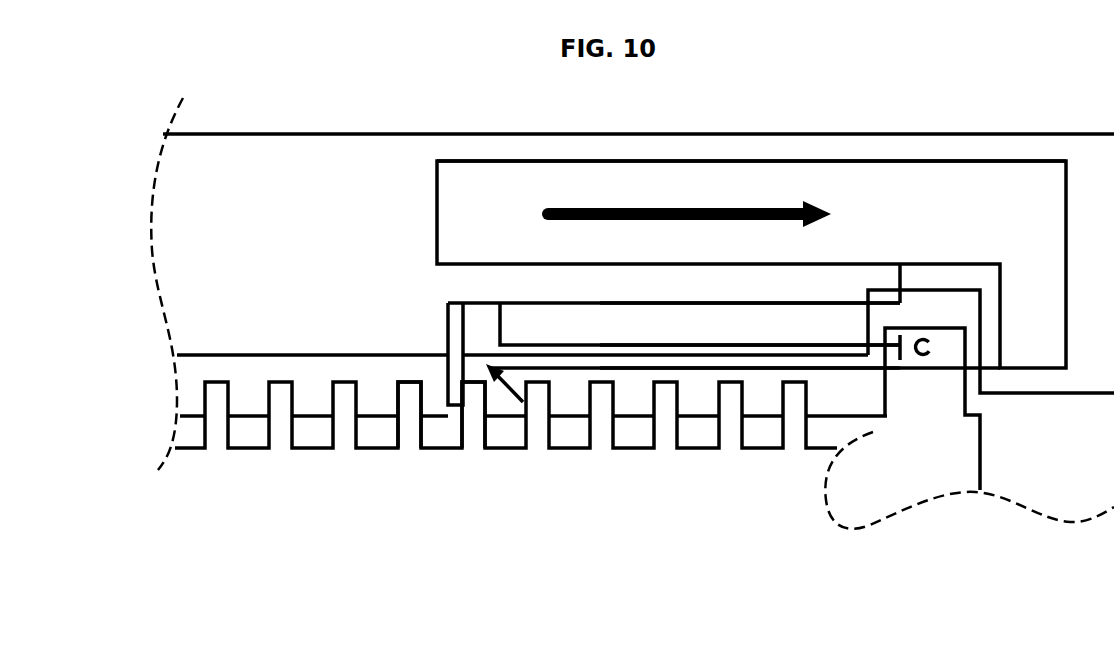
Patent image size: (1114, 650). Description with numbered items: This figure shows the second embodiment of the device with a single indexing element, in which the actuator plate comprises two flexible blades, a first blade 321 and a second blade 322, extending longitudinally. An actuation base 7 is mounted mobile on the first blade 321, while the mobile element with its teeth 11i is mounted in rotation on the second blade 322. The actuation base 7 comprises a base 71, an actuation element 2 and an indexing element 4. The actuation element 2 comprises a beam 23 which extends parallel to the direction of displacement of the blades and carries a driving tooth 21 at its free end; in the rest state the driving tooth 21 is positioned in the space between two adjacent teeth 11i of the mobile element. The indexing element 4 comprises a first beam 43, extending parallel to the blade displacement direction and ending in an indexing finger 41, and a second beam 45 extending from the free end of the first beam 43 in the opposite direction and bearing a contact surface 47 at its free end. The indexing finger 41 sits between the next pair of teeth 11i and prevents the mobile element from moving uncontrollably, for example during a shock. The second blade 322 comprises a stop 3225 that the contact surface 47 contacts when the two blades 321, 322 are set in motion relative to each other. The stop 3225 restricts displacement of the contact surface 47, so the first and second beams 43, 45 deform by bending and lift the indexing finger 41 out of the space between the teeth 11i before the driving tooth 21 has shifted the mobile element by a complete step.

The first blade 321 is at (271, 160).
The second blade 322 is at (957, 462).
The stop 3225 is at (937, 349).
The actuation base 7 is at (419, 204).
The base 71 is at (494, 178).
The indexing finger 41 is at (453, 338).
The indexing element 4 is at (588, 303).
The first beam 43 is at (628, 303).
The second beam 45 is at (628, 345).
The contact surface 47 is at (913, 336).
The actuation element 2 is at (757, 382).
The driving tooth 21 is at (512, 375).
The beam 23 is at (687, 373).
The tooth 11i is at (540, 430).